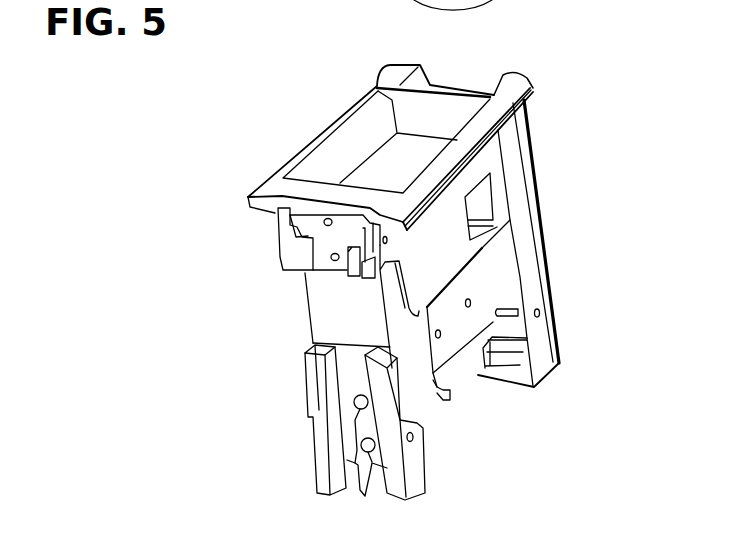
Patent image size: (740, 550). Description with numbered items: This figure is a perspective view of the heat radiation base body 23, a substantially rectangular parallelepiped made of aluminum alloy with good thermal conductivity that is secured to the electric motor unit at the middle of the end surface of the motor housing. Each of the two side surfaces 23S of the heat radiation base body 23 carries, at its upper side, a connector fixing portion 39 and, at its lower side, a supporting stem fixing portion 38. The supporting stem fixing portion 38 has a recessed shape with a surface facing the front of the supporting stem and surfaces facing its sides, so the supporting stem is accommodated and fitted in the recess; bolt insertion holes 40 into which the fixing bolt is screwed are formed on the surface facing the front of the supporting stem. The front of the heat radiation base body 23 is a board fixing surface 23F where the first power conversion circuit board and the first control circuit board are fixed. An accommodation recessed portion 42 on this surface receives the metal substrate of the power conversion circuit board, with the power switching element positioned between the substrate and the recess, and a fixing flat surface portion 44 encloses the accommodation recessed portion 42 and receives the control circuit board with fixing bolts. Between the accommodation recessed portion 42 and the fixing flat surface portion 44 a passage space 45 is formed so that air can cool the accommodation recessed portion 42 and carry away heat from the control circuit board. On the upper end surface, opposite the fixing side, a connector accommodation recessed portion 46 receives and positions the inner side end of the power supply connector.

The connector accommodation recessed portion 46 is at (358, 142).
The heat radiation base body 23 is at (534, 146).
The side surface 23S is at (541, 220).
The board fixing surface 23F is at (478, 288).
The connector fixing portion 39 is at (290, 223).
The fixing flat surface portion 44 is at (337, 290).
The supporting stem fixing portion 38 is at (352, 380).
The bolt insertion hole 40 is at (365, 499).
The accommodation recessed portion 42 is at (455, 343).
The passage space 45 is at (427, 402).